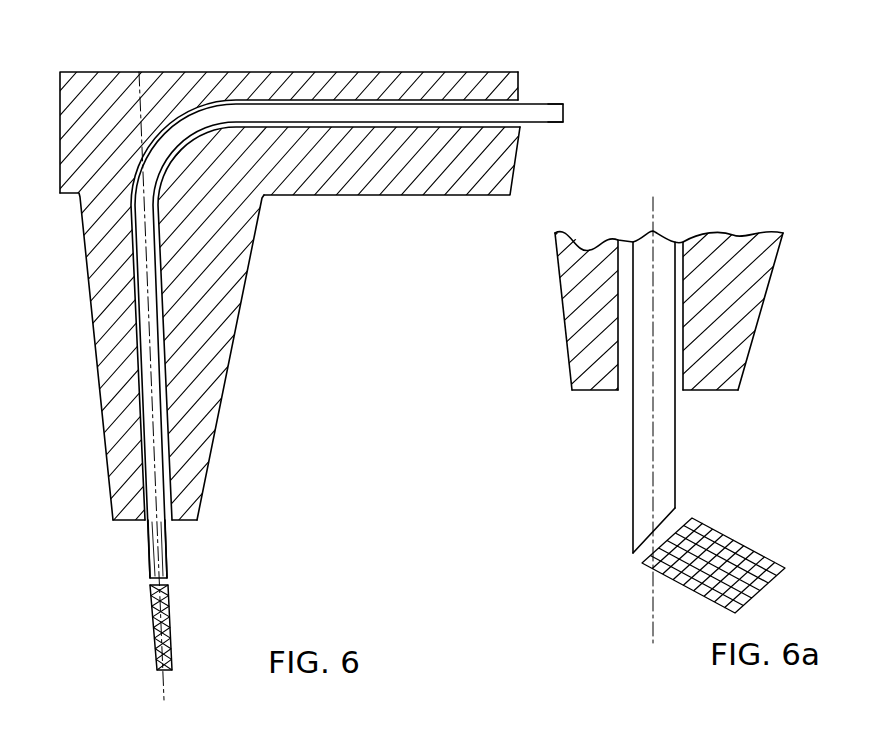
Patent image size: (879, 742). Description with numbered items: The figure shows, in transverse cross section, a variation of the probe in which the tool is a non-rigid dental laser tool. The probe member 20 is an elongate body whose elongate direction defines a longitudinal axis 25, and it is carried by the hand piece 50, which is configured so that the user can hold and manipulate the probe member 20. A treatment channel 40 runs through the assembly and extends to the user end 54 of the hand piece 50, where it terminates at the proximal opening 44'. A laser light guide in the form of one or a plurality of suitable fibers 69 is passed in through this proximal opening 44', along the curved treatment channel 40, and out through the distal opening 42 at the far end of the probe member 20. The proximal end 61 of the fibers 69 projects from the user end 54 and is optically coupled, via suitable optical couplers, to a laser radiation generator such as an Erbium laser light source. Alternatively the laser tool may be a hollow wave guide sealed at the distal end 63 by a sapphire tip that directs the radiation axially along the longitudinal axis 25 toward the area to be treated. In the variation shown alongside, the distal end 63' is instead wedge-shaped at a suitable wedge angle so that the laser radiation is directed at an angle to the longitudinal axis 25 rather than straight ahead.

In FIG. 6, the probe member 20 is at (193, 353).
In FIG. 6, the longitudinal axis 25 is at (165, 628).
In FIG. 6a, the longitudinal axis 25 is at (653, 598).
In FIG. 6, the treatment channel 40 is at (181, 110).
In FIG. 6a, the treatment channel 40 is at (623, 275).
In FIG. 6, the distal opening 42 is at (172, 521).
In FIG. 6a, the distal opening 42 is at (615, 392).
In FIG. 6, the proximal opening 44' is at (565, 83).
In FIG. 6, the hand piece 50 is at (452, 80).
In FIG. 6, the user end 54 is at (498, 173).
In FIG. 6, the proximal end 61 is at (549, 110).
In FIG. 6, the distal end 63 is at (122, 549).
In FIG. 6a, the distal end 63' is at (619, 525).
In FIG. 6, the fibers 69 is at (242, 112).
In FIG. 6a, the fibers 69 is at (640, 335).